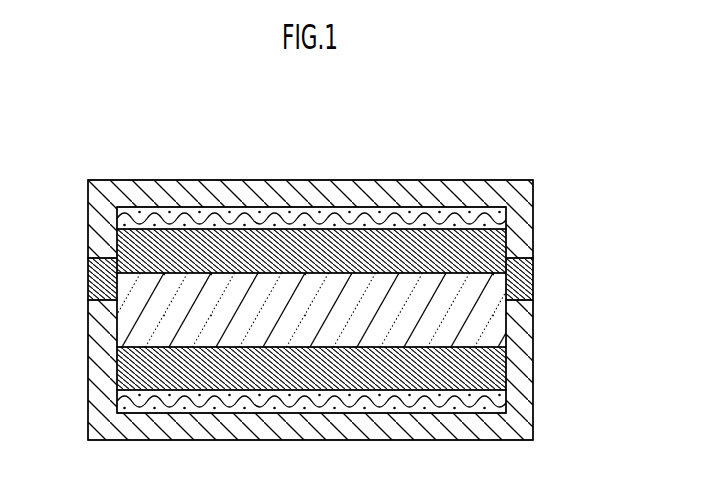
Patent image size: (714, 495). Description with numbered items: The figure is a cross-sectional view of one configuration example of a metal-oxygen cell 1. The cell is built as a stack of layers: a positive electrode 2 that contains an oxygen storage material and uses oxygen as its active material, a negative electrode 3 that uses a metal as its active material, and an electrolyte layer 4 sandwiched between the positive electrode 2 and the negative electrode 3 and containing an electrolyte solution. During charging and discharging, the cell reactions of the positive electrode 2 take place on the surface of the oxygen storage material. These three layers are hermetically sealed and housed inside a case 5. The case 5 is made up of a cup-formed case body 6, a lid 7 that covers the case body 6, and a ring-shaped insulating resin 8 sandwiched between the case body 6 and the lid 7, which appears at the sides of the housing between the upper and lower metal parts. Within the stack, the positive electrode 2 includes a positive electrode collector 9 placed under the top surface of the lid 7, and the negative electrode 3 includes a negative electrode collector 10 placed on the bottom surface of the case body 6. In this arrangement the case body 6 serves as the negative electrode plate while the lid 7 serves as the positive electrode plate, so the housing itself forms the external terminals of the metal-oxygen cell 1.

The metal-oxygen cell 1 is at (578, 142).
The positive electrode 2 is at (535, 237).
The negative electrode 3 is at (506, 365).
The electrolyte layer 4 is at (506, 327).
The case 5 is at (274, 310).
The case body 6 is at (289, 370).
The lid 7 is at (88, 240).
The insulating resin 8 is at (88, 280).
The positive electrode collector 9 is at (535, 207).
The negative electrode collector 10 is at (506, 397).